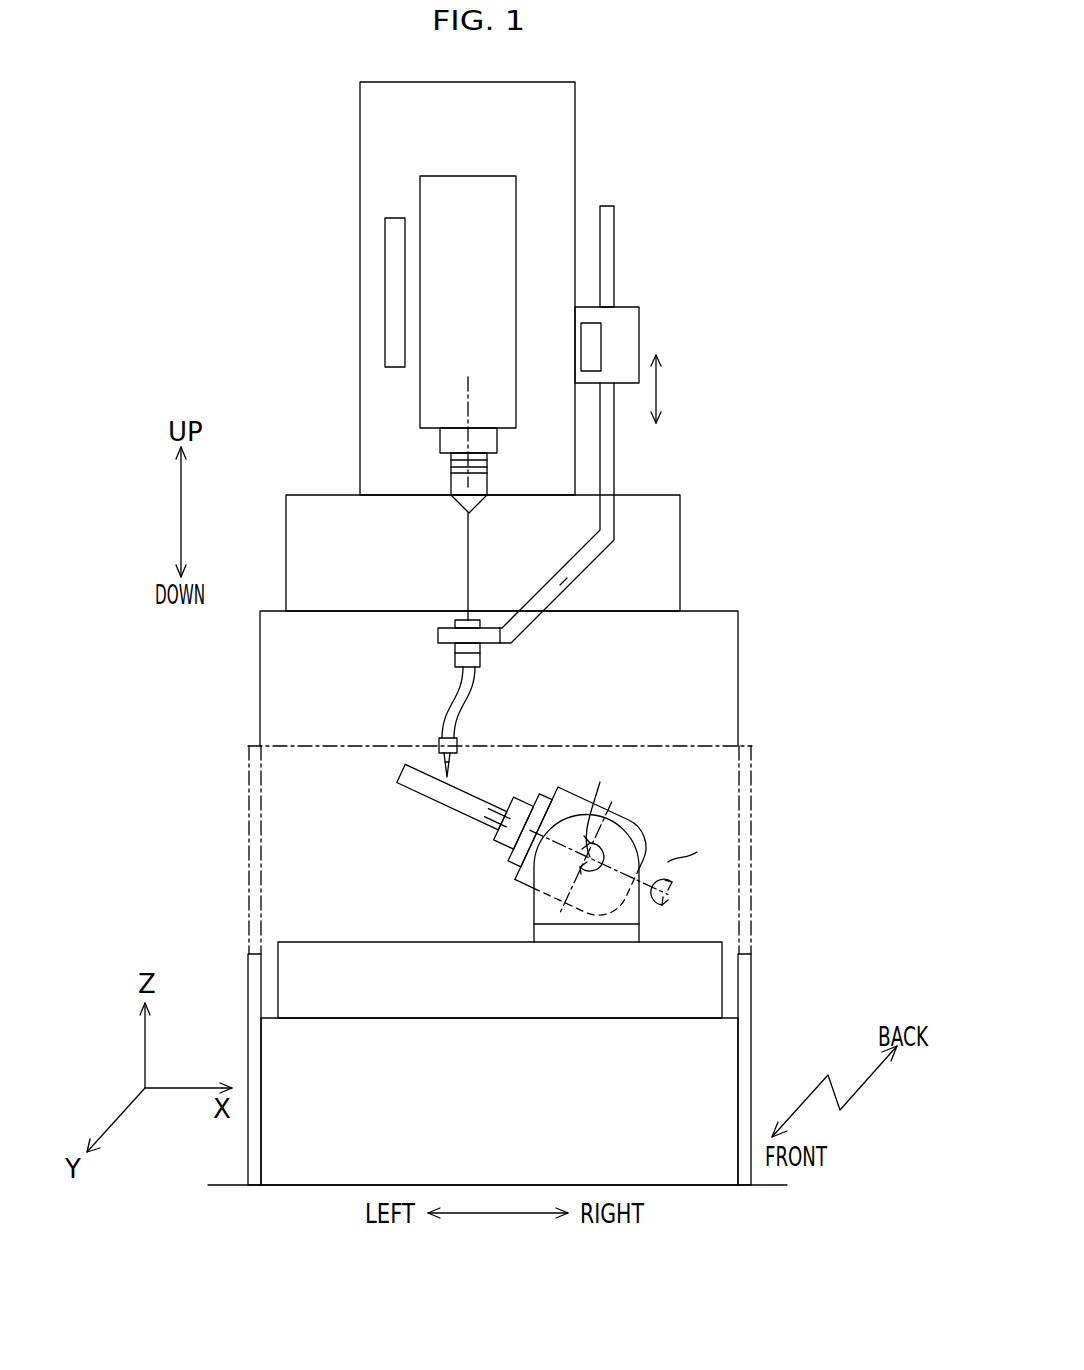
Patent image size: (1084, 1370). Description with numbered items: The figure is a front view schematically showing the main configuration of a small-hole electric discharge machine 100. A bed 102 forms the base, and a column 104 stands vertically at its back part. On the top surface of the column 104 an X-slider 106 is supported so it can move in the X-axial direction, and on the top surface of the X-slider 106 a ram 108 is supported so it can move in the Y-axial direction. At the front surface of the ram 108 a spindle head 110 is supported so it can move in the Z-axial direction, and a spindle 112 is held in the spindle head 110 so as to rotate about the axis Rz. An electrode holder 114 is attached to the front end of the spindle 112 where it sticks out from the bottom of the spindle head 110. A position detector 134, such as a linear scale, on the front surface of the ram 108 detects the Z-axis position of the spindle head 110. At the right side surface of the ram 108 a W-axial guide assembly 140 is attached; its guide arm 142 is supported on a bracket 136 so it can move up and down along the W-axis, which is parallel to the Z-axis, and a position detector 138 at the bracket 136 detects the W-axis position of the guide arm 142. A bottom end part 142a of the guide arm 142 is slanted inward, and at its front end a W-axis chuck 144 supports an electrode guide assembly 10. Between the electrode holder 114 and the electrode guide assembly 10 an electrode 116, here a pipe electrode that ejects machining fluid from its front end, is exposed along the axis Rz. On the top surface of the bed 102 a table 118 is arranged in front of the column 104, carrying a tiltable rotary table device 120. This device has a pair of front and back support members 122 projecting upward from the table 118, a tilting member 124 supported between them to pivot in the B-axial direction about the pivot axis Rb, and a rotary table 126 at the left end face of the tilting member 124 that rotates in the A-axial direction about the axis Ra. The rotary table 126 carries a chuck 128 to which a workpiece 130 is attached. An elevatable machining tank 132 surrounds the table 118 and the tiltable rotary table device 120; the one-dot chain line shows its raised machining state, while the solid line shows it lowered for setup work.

The small-hole electric discharge machine 100 is at (781, 169).
The bed 102 is at (695, 1073).
The column 104 is at (739, 640).
The X-slider 106 is at (681, 522).
The ram 108 is at (576, 170).
The spindle head 110 is at (420, 198).
The spindle 112 is at (440, 436).
The electrode holder 114 is at (452, 470).
The electrode 116 is at (472, 555).
The table 118 is at (695, 995).
The tiltable rotary table device 120 is at (712, 800).
The support members 122 is at (534, 905).
The tilting member 124 is at (629, 820).
The rotary table 126 is at (513, 863).
The chuck 128 is at (502, 843).
The workpiece 130 is at (408, 784).
The machining tank 132 is at (248, 983).
The position detector 134 is at (385, 320).
The bracket 136 is at (640, 333).
The position detector 138 is at (601, 332).
The W-axial guide assembly 140 is at (691, 358).
The guide arm 142 is at (616, 458).
The bottom end part 142a is at (584, 556).
The W-axis chuck 144 is at (440, 630).
The electrode guide assembly 10 is at (447, 706).